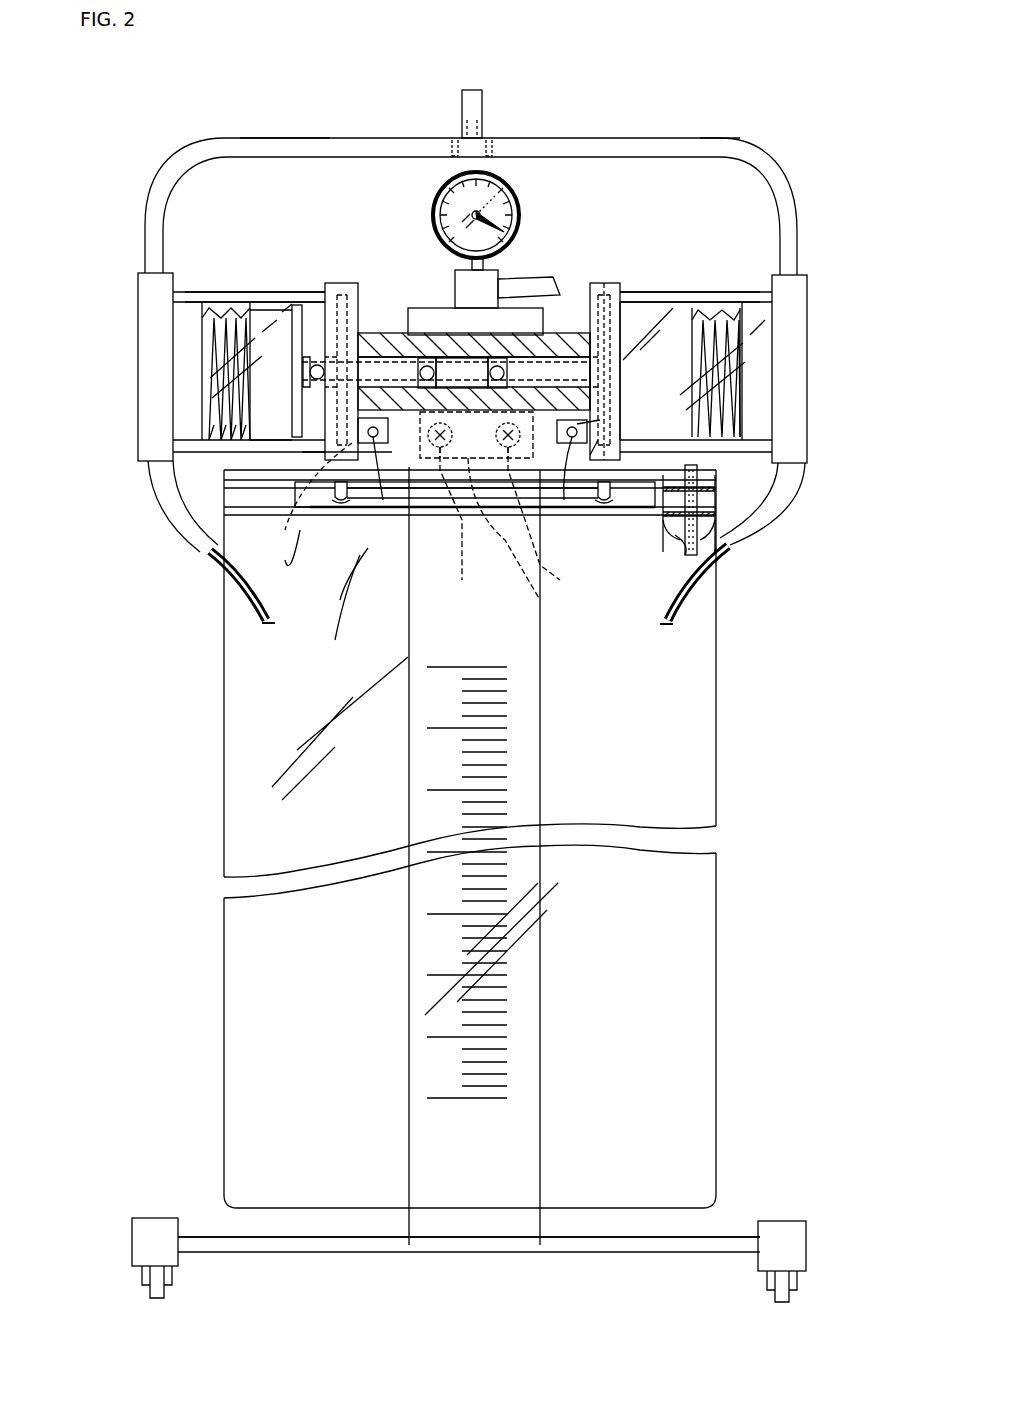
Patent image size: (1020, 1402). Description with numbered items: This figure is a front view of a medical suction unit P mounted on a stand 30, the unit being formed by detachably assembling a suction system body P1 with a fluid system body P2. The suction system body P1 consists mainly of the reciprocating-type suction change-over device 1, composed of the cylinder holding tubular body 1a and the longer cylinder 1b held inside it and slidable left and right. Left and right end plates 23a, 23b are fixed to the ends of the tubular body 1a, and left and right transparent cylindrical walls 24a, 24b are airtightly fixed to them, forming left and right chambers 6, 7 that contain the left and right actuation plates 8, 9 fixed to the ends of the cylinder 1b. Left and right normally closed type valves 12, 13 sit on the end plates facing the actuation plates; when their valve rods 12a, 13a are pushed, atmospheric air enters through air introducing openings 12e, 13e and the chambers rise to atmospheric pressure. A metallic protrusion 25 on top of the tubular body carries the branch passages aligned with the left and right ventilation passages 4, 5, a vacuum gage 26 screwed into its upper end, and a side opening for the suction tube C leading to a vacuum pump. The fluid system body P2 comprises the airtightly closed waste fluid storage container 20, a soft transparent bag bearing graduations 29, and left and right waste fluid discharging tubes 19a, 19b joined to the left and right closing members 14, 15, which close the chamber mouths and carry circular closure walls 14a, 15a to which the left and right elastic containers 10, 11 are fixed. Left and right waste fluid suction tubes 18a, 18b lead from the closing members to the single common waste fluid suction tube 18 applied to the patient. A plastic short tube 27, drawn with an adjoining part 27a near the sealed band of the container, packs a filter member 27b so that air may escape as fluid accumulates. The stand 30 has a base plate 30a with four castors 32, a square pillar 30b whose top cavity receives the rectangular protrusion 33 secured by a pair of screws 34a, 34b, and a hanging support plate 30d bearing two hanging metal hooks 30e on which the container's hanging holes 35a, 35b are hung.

The reciprocating-type suction change-over device 1 is at (395, 270).
The cylinder holding tubular body 1a is at (372, 333).
The cylinder 1b is at (570, 348).
The left ventilation passage 4 is at (415, 370).
The right ventilation passage 5 is at (530, 372).
The left chamber 6 is at (268, 310).
The right chamber 7 is at (655, 300).
The left actuation plate 8 is at (298, 305).
The right actuation plate 9 is at (604, 283).
The left elastic container 10 is at (225, 310).
The right elastic container 11 is at (712, 330).
The left normally closed type valve 12 is at (378, 505).
The left valve rod 12a is at (296, 453).
The left air introducing opening 12e is at (398, 515).
The right normally closed type valve 13 is at (562, 515).
The right valve rod 13a is at (618, 416).
The right air introducing opening 13e is at (574, 428).
The left closing member 14 is at (150, 470).
The left circular closure wall 14a is at (188, 432).
The right closing member 15 is at (793, 357).
The right circular closure wall 15a is at (757, 300).
The single common waste fluid suction tube 18 is at (478, 96).
The left waste fluid suction tube 18a is at (250, 142).
The right waste fluid suction tube 18b is at (708, 142).
The left waste fluid discharging tube 19a is at (200, 552).
The right waste fluid discharging tube 19b is at (755, 530).
The waste fluid storage container 20 is at (700, 950).
The left end plate 23a is at (345, 290).
The right end plate 23b is at (598, 300).
The left transparent cylindrical wall 24a is at (195, 295).
The right transparent cylindrical wall 24b is at (680, 297).
The protrusion 25 is at (462, 288).
The vacuum gage 26 is at (508, 178).
The plastic short tube 27 is at (710, 474).
The clamp bracket 27a is at (700, 535).
The filter member 27b is at (732, 568).
The graduations 29 is at (495, 790).
The stand 30 is at (738, 1205).
The base plate 30a is at (260, 1245).
The square pillar 30b is at (475, 1225).
The hanging support plate 30d is at (478, 495).
The hanging metal hook 30e is at (336, 495).
The castor 32 is at (170, 1290).
The rectangular protrusion 33 is at (499, 514).
The screw 34a is at (454, 512).
The screw 34b is at (548, 506).
The left hanging hole 35a is at (348, 520).
The right hanging hole 35b is at (630, 510).
The suction tube C is at (530, 290).
The suction unit P is at (808, 260).
The suction system body P1 is at (410, 252).
The fluid system body P2 is at (428, 125).